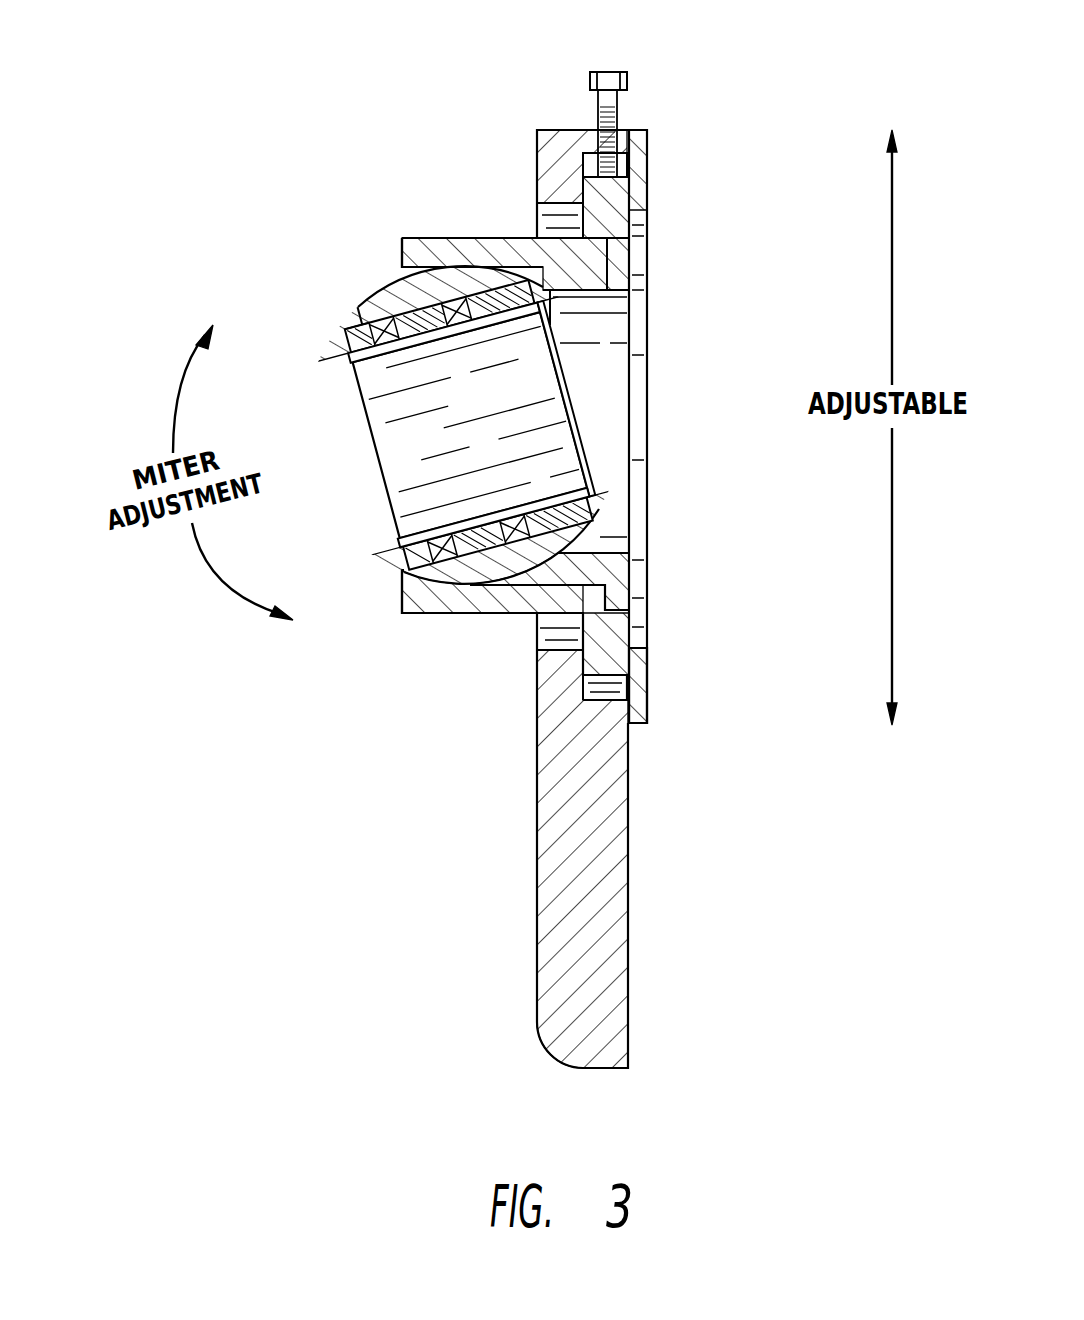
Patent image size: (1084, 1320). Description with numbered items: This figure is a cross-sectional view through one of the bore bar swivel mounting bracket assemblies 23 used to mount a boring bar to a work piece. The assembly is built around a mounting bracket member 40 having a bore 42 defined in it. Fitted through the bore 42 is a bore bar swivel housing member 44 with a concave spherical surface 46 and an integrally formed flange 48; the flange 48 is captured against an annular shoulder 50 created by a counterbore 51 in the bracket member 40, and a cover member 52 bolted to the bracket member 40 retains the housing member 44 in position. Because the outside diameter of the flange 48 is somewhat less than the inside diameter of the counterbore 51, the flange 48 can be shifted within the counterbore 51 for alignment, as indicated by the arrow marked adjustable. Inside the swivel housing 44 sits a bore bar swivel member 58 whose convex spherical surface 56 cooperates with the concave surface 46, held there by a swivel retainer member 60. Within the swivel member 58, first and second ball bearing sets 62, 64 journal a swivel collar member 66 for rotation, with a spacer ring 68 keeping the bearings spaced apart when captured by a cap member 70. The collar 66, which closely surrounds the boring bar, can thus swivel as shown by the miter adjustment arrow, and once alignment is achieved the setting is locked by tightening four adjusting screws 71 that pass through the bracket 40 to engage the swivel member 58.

The bore bar swivel mounting bracket assembly 23 is at (775, 70).
The mounting bracket member 40 is at (632, 820).
The bore 42 is at (563, 648).
The bore bar swivel housing member 44 is at (425, 238).
The concave spherical surface 46 is at (440, 578).
The flange 48 is at (613, 233).
The annular shoulder 50 is at (610, 178).
The counterbore 51 is at (620, 155).
The cover member 52 is at (640, 670).
The convex spherical surface 56 is at (388, 278).
The bore bar swivel member 58 is at (437, 290).
The swivel retainer member 60 is at (583, 283).
The first ball bearing set 62 is at (593, 518).
The second ball bearing set 64 is at (437, 548).
The swivel collar member 66 is at (447, 522).
The spacer ring 68 is at (355, 364).
The cap member 70 is at (352, 312).
The adjusting screw 71 is at (620, 69).